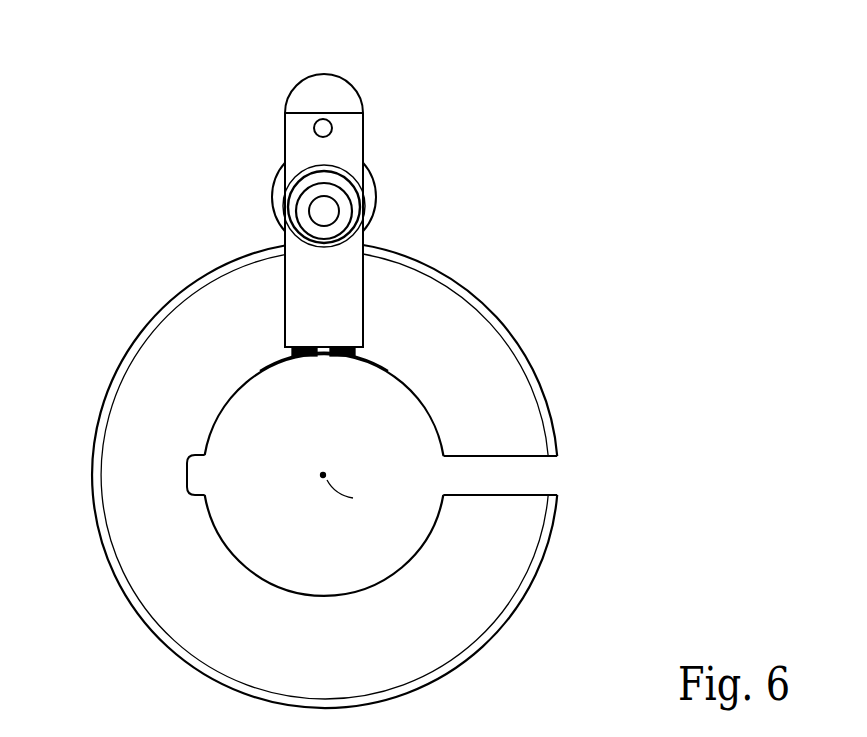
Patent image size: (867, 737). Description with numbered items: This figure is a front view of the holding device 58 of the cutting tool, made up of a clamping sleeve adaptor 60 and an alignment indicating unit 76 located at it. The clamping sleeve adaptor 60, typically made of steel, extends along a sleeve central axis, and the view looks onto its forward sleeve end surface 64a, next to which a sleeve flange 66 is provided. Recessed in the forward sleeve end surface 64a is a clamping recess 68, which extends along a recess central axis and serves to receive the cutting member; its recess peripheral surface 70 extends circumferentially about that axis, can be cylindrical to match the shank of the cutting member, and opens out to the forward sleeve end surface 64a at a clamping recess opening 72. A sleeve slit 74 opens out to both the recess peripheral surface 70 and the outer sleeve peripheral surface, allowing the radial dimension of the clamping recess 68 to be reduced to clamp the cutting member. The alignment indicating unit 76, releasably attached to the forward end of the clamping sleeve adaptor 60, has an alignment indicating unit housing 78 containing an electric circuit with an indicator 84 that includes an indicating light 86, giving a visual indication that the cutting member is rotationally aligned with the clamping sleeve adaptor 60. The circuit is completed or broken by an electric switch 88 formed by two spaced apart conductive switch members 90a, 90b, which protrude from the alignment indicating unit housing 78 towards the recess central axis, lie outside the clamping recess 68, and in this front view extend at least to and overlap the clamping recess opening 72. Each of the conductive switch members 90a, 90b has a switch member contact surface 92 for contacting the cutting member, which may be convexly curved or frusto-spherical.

The holding device 58 is at (454, 105).
The clamping sleeve adaptor 60 is at (337, 470).
The forward sleeve end surface 64a is at (160, 358).
The sleeve flange 66 is at (462, 627).
The clamping recess 68 is at (242, 533).
The recess peripheral surface 70 is at (427, 405).
The clamping recess opening 72 is at (283, 537).
The sleeve slit 74 is at (520, 475).
The alignment indicating unit 76 is at (325, 220).
The alignment indicating unit housing 78 is at (298, 132).
The indicator 84 is at (264, 196).
The indicating light 86 is at (320, 214).
The electric switch 88 is at (300, 385).
The conductive switch member 90a is at (279, 352).
The conductive switch member 90b is at (371, 352).
The switch member contact surface 92 is at (325, 384).